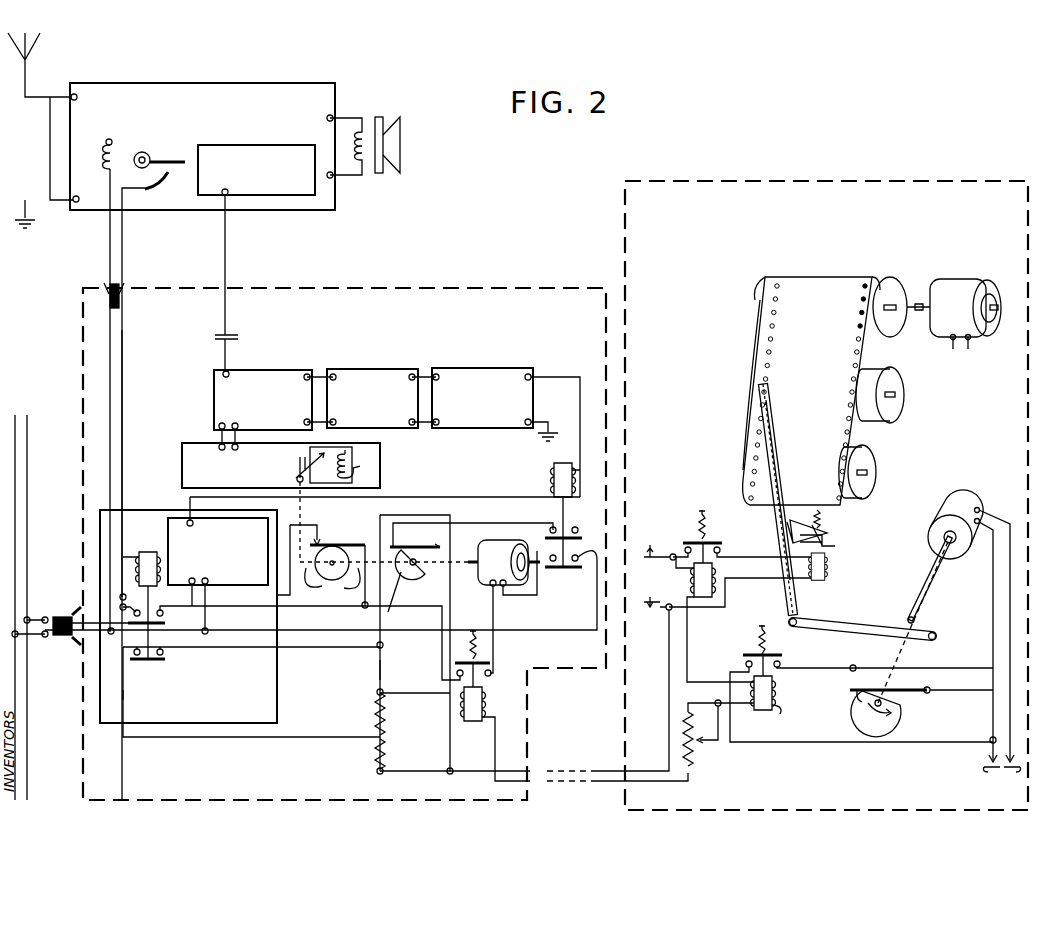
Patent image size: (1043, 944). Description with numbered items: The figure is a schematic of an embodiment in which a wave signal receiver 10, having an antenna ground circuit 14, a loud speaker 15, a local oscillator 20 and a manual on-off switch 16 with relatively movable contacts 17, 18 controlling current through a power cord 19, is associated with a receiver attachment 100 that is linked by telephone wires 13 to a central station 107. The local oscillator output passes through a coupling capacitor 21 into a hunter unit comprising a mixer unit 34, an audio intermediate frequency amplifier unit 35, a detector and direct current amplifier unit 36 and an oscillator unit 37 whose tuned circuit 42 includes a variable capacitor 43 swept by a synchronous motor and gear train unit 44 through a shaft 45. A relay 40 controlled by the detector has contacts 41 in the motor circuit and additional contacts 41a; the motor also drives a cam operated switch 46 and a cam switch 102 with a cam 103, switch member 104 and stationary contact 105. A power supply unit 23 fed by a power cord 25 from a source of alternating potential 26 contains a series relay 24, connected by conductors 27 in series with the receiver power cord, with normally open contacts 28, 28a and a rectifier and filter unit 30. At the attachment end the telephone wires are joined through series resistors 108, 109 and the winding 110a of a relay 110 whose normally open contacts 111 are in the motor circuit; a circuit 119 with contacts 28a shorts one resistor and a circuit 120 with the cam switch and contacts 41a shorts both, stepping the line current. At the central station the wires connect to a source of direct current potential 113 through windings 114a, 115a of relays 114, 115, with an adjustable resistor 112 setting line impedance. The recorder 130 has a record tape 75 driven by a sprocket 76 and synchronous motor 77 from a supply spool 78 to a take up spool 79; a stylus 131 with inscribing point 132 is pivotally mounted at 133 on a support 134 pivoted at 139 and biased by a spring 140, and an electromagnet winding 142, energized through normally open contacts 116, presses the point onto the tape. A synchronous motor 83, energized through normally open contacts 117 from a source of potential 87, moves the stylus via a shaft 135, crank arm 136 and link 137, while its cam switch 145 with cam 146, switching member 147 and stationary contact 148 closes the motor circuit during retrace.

The wave signal receiver 10 is at (110, 90).
The telephone wires 13 is at (540, 780).
The antenna ground circuit 14 is at (50, 150).
The loud speaker 15 is at (384, 115).
The on-off switch 16 is at (146, 146).
The movable contact 17 is at (160, 160).
The movable contact 18 is at (163, 183).
The power cord 19 is at (110, 249).
The local oscillator 20 is at (226, 137).
The coupling capacitor 21 is at (216, 337).
The power supply unit 23 is at (172, 512).
The series relay 24 is at (152, 552).
The power cord 25 is at (88, 636).
The source of alternating potential 26 is at (28, 458).
The conductors 27 is at (122, 364).
The normally open contacts 28 is at (156, 622).
The normally open contacts 28a is at (166, 662).
The rectifier and filter unit 30 is at (169, 534).
The mixer unit 34 is at (258, 376).
The audio intermediate frequency amplifier unit 35 is at (359, 375).
The detector and direct current amplifier unit 36 is at (466, 374).
The oscillator unit 37 is at (207, 444).
The relay 40 is at (556, 470).
The contacts 41 is at (557, 569).
The contacts 41a is at (555, 528).
The tuned circuit 42 is at (360, 466).
The variable capacitor 43 is at (342, 504).
The synchronous motor and gear train unit 44 is at (488, 576).
The shaft 45 is at (332, 576).
The cam operated switch 46 is at (351, 534).
The record tape 75 is at (768, 356).
The sprocket 76 is at (894, 287).
The synchronous motor 77 is at (955, 285).
The supply spool 78 is at (872, 466).
The take up spool 79 is at (899, 403).
The synchronous motor 83 is at (950, 508).
The source of potential 87 is at (1008, 760).
The receiver attachment 100 is at (268, 296).
The cam switch 102 is at (426, 601).
The cam 103 is at (388, 608).
The switch member 104 is at (411, 547).
The stationary contact 105 is at (400, 530).
The central station 107 is at (671, 190).
The resistor 108 is at (378, 719).
The resistor 109 is at (378, 761).
The relay 110 is at (477, 725).
The winding 110a is at (483, 707).
The normally open contacts 111 is at (477, 659).
The adjustable resistor 112 is at (696, 757).
The source of direct current potential 113 is at (656, 606).
The relay 114 is at (703, 600).
The winding 114a is at (714, 591).
The relay 115 is at (773, 681).
The winding 115a is at (772, 709).
The normally open contacts 116 is at (704, 527).
The normally open contacts 117 is at (777, 655).
The circuit 119 is at (297, 736).
The circuit 120 is at (444, 666).
The recorder 130 is at (847, 269).
The stylus 131 is at (775, 441).
The inscribing point 132 is at (772, 388).
The pivotal mounting 133 is at (772, 542).
The support 134 is at (812, 525).
The shaft 135 is at (940, 560).
The crank arm 136 is at (930, 624).
The link 137 is at (862, 609).
The pivot 139 is at (823, 545).
The spring 140 is at (821, 523).
The winding 142 is at (826, 579).
The cam switch 145 is at (850, 723).
The cam 146 is at (898, 715).
The switching member 147 is at (866, 699).
The stationary contact 148 is at (852, 686).